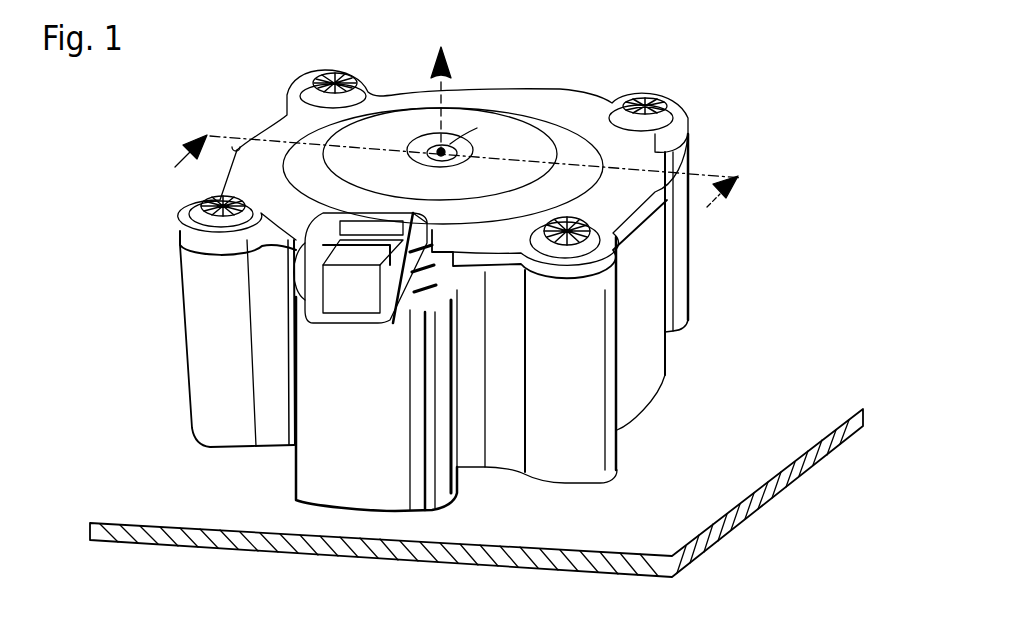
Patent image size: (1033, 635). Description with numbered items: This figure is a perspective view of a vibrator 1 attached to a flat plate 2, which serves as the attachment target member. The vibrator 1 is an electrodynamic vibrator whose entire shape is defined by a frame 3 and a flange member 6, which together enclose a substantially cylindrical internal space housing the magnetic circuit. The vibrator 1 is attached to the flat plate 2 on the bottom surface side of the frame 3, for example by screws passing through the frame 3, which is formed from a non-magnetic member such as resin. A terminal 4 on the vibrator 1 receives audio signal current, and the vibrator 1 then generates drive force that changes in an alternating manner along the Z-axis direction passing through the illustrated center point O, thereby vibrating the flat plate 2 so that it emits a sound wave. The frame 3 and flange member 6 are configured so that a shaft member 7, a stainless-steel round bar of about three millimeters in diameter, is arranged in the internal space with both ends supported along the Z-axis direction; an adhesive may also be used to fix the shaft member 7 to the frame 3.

The vibrator 1 is at (178, 123).
The flat plate 2 is at (680, 536).
The frame 3 is at (190, 383).
The terminal 4 is at (317, 266).
The flange member 6 is at (298, 122).
The shaft member 7 is at (448, 146).